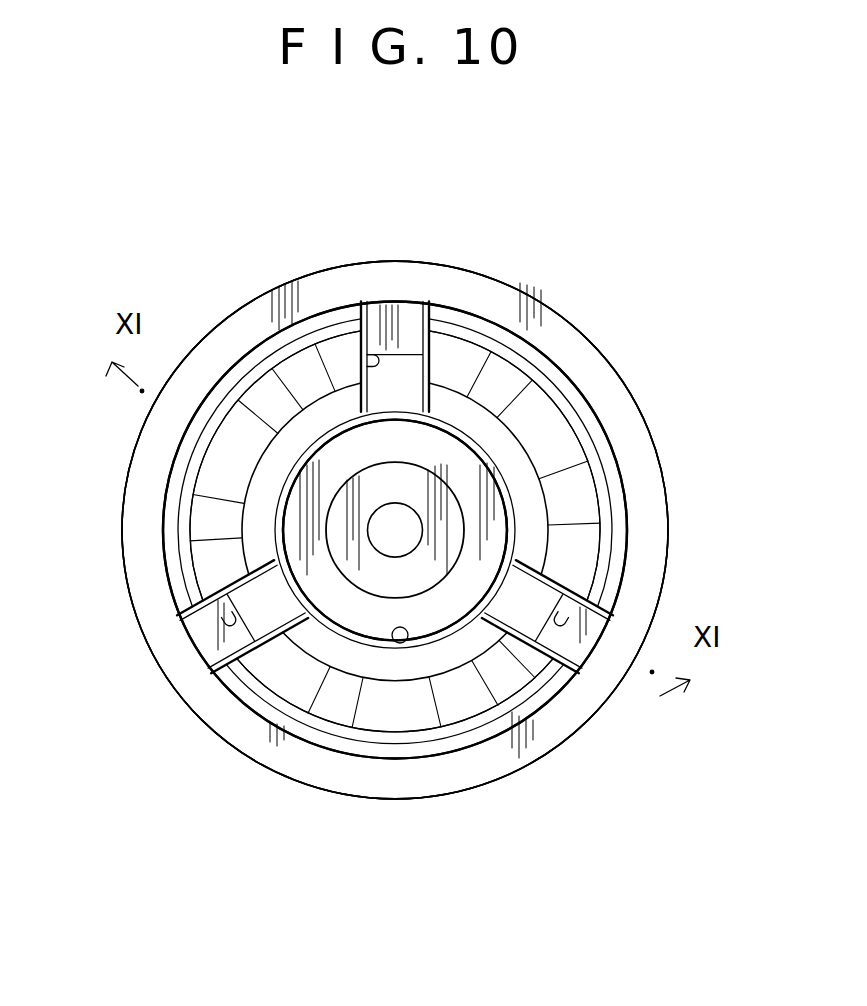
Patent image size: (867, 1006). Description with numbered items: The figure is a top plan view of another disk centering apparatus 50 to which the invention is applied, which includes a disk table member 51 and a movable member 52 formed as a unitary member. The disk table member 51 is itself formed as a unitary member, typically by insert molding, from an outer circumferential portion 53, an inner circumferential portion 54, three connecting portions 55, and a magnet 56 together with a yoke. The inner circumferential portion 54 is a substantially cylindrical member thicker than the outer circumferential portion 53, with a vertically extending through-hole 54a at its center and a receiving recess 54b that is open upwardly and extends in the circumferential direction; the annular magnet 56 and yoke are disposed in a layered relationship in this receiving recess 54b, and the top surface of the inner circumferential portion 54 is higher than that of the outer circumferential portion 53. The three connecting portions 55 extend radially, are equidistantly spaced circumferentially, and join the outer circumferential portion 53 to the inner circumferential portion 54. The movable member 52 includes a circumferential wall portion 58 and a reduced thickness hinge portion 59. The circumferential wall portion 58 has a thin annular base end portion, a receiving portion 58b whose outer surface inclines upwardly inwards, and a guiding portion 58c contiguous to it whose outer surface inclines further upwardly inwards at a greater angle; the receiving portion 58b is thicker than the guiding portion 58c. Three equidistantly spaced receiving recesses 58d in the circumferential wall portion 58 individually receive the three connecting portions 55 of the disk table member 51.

The disk centering apparatus 50 is at (578, 216).
The disk table member 51 is at (650, 427).
The movable member 52 is at (550, 402).
The outer circumferential portion 53 is at (669, 506).
The inner circumferential portion 54 is at (330, 625).
The through-hole 54a is at (388, 550).
The receiving recess 54b is at (401, 642).
The connecting portions 55 is at (404, 356).
The magnet 56 is at (448, 442).
The circumferential wall portion 58 is at (198, 576).
The receiving portion 58b is at (208, 500).
The guiding portion 58c is at (262, 470).
The receiving recesses 58d is at (372, 358).
The reduced thickness hinge portion 59 is at (263, 358).